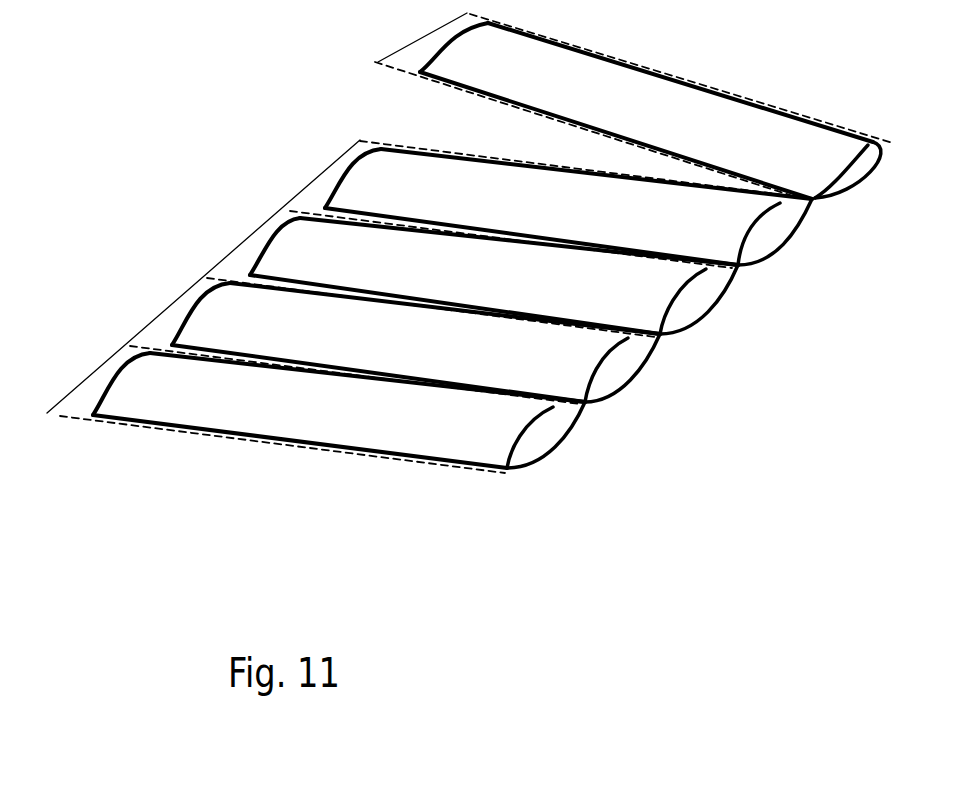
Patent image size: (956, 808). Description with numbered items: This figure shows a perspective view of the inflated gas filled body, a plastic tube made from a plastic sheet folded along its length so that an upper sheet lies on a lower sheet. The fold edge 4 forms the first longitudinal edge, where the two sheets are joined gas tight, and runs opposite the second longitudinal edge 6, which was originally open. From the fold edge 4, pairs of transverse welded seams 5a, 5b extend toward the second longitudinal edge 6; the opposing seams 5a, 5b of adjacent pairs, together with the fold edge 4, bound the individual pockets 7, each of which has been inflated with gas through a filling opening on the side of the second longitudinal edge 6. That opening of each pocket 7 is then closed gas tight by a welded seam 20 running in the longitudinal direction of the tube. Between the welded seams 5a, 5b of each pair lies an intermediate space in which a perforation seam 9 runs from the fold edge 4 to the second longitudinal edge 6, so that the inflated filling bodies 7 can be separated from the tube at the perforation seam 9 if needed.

The pocket 7 is at (581, 95).
The perforation seam 9 is at (423, 73).
The second longitudinal edge 6 is at (193, 290).
The welded seam 20 is at (120, 397).
The fold edge 4 is at (782, 223).
The welded seam 5a is at (418, 308).
The welded seam 5b is at (418, 385).